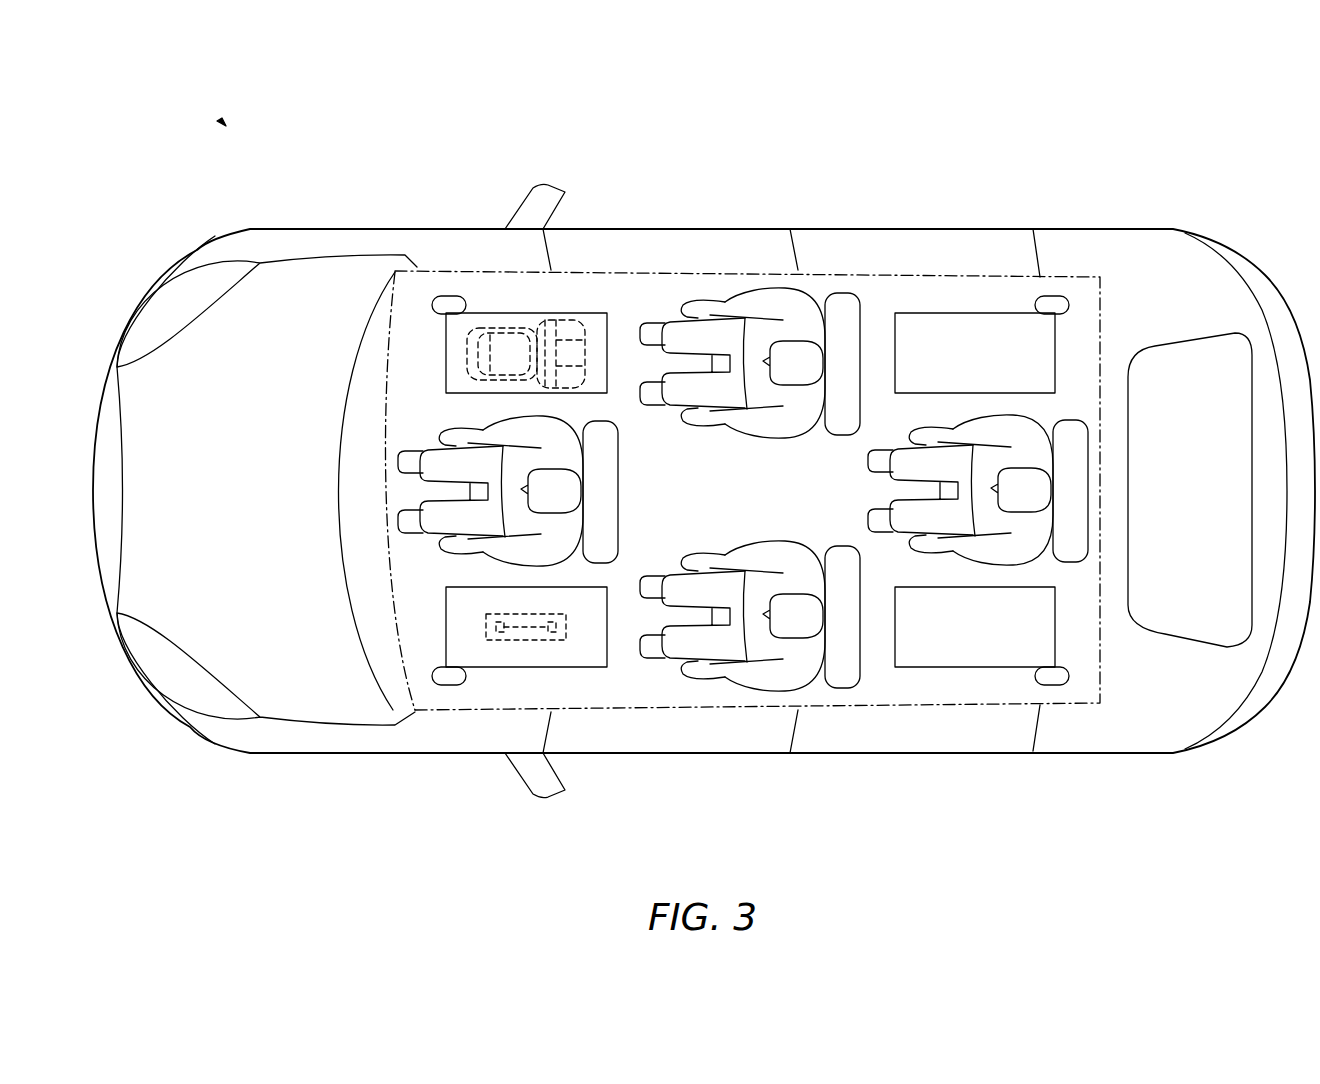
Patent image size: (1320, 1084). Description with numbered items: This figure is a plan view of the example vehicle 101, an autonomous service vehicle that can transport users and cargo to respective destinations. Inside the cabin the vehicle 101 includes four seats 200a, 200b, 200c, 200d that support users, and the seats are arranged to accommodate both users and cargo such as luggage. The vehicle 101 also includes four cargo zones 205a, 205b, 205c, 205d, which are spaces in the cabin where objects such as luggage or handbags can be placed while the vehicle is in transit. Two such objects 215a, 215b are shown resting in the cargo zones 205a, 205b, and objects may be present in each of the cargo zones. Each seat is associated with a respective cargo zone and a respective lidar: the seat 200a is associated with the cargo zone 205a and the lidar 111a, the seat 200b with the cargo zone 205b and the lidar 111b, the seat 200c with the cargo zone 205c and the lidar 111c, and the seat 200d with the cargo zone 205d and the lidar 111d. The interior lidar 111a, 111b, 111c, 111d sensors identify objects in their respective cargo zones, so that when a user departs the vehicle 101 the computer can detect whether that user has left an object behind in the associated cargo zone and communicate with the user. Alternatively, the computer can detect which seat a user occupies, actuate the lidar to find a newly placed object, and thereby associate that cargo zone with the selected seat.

The vehicle 101 is at (226, 126).
The lidar 111a is at (447, 688).
The lidar 111b is at (447, 296).
The lidar 111c is at (1053, 296).
The lidar 111d is at (1052, 687).
The seat 200a is at (845, 690).
The seat 200b is at (622, 525).
The seat 200c is at (845, 290).
The seat 200d is at (1088, 478).
The cargo zone 205a is at (568, 667).
The cargo zone 205b is at (568, 313).
The cargo zone 205c is at (925, 313).
The cargo zone 205d is at (925, 667).
The object 215a is at (507, 641).
The object 215b is at (507, 320).